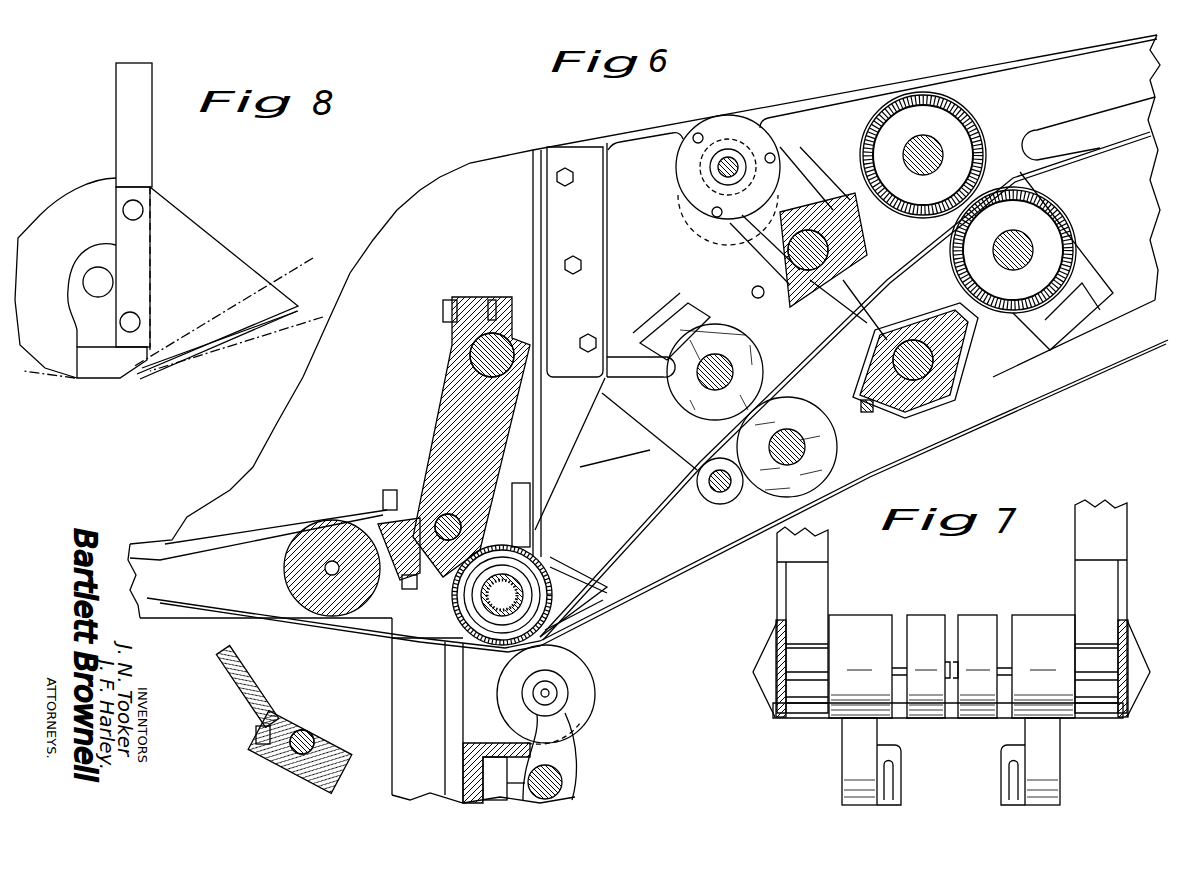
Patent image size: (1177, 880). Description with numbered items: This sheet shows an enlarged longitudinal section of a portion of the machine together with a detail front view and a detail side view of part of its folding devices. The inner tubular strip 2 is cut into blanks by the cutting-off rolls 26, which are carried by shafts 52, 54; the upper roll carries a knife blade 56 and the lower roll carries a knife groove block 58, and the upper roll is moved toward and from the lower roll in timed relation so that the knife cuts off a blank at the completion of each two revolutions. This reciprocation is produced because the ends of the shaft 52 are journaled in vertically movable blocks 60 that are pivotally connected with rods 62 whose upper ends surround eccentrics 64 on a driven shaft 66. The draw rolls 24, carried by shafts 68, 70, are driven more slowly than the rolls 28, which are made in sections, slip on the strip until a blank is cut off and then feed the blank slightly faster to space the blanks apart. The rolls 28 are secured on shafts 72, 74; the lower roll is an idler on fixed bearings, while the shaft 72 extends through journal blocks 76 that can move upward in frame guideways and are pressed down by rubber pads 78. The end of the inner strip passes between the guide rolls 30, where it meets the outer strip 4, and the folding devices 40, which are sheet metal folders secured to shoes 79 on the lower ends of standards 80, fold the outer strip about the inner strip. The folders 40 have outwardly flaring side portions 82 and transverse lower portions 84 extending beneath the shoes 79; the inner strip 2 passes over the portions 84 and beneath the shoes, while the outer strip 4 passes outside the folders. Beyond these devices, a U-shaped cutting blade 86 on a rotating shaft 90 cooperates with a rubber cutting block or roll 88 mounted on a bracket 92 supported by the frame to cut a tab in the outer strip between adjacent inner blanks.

In FIG. 8, the inner tubular strip 2 is at (304, 262).
In FIG. 6, the inner tubular strip 2 is at (664, 498).
In FIG. 8, the outer strip 4 is at (311, 302).
In FIG. 6, the outer strip 4 is at (689, 558).
In FIG. 6, the draw rolls 24 is at (940, 97).
In FIG. 6, the cutting-off rolls 26 is at (827, 195).
In FIG. 6, the rolls 28 is at (680, 390).
In FIG. 8, the guide rolls 30 is at (66, 190).
In FIG. 6, the guide rolls 30 is at (455, 611).
In FIG. 7, the guide rolls 30 is at (975, 615).
In FIG. 8, the folding devices 40 is at (200, 223).
In FIG. 6, the folding devices 40 is at (600, 596).
In FIG. 7, the folding devices 40 is at (775, 635).
In FIG. 6, the shaft 52 is at (828, 249).
In FIG. 6, the shaft 54 is at (930, 357).
In FIG. 6, the knife blade 56 is at (750, 296).
In FIG. 6, the knife groove block 58 is at (860, 405).
In FIG. 6, the vertically movable blocks 60 is at (748, 247).
In FIG. 6, the rods 62 is at (732, 226).
In FIG. 6, the eccentrics 64 is at (690, 208).
In FIG. 6, the driven shaft 66 is at (731, 160).
In FIG. 6, the shaft 68 is at (940, 147).
In FIG. 6, the shaft 70 is at (1025, 252).
In FIG. 6, the shaft 72 is at (697, 398).
In FIG. 6, the shaft 74 is at (820, 430).
In FIG. 6, the journal blocks 76 is at (700, 326).
In FIG. 6, the rubber pads 78 is at (655, 340).
In FIG. 8, the shoes 79 is at (92, 366).
In FIG. 7, the shoes 79 is at (795, 710).
In FIG. 8, the standards 80 is at (152, 171).
In FIG. 6, the standards 80 is at (528, 540).
In FIG. 7, the standards 80 is at (812, 572).
In FIG. 8, the outwardly flaring side portions 82 is at (205, 249).
In FIG. 6, the outwardly flaring side portions 82 is at (557, 570).
In FIG. 7, the outwardly flaring side portions 82 is at (768, 660).
In FIG. 8, the transverse lower portions 84 is at (231, 335).
In FIG. 6, the transverse lower portions 84 is at (582, 620).
In FIG. 6, the U-shaped cutting blade 86 is at (218, 655).
In FIG. 6, the rubber cutting block or roll 88 is at (290, 571).
In FIG. 6, the rotating shaft 90 is at (308, 733).
In FIG. 6, the bracket 92 is at (440, 443).